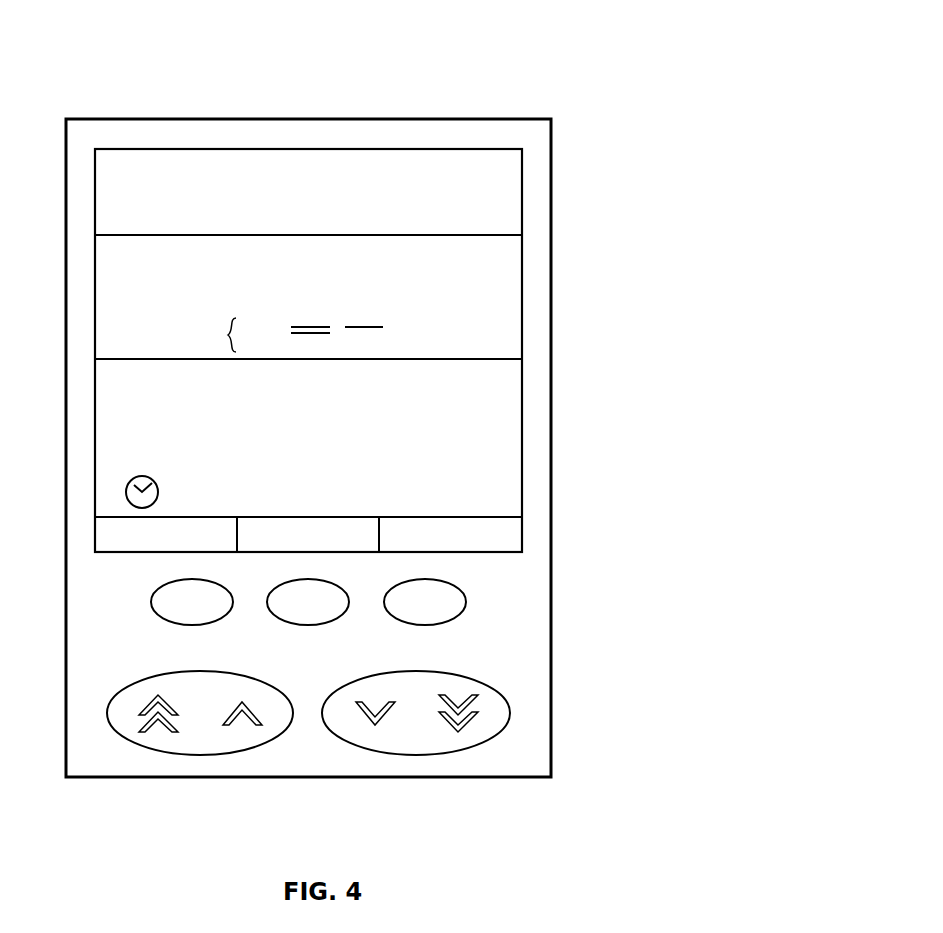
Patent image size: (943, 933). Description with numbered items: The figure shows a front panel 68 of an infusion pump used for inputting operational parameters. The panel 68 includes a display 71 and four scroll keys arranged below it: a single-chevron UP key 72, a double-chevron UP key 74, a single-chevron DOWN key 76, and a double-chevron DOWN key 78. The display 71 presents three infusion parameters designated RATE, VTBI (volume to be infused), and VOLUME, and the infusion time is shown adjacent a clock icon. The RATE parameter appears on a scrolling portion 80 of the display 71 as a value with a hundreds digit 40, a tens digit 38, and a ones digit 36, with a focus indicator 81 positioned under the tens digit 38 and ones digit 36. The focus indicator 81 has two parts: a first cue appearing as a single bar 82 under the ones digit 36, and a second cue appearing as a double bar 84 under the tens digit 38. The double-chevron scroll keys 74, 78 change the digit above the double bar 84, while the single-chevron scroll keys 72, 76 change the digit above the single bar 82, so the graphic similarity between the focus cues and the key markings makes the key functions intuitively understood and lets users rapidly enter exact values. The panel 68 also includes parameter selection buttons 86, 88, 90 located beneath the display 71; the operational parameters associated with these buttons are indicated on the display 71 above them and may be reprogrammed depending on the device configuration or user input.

The panel 68 is at (535, 29).
The display 71 is at (299, 148).
The scrolling portion 80 is at (568, 360).
The hundreds digit 40 is at (262, 265).
The tens digit 38 is at (310, 265).
The ones digit 36 is at (363, 265).
The focus indicator 81 is at (228, 335).
The single bar 82 is at (365, 330).
The double bar 84 is at (320, 336).
The parameter selection button 86 is at (151, 602).
The parameter selection button 88 is at (308, 626).
The parameter selection button 90 is at (466, 602).
The single-chevron UP key 72 is at (236, 728).
The double-chevron UP key 74 is at (148, 732).
The single-chevron DOWN key 76 is at (378, 727).
The double-chevron DOWN key 78 is at (464, 732).